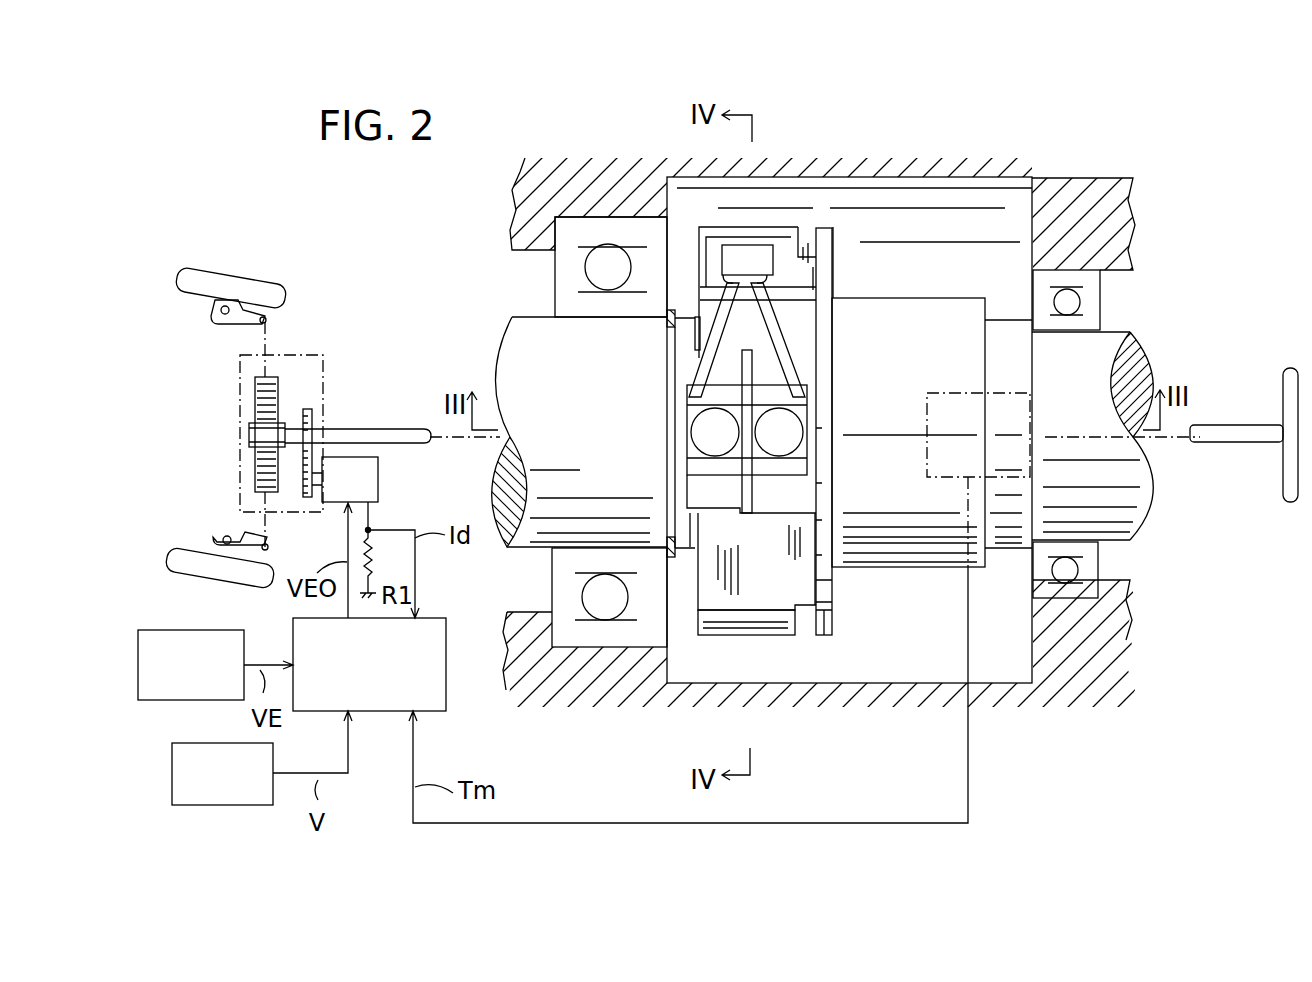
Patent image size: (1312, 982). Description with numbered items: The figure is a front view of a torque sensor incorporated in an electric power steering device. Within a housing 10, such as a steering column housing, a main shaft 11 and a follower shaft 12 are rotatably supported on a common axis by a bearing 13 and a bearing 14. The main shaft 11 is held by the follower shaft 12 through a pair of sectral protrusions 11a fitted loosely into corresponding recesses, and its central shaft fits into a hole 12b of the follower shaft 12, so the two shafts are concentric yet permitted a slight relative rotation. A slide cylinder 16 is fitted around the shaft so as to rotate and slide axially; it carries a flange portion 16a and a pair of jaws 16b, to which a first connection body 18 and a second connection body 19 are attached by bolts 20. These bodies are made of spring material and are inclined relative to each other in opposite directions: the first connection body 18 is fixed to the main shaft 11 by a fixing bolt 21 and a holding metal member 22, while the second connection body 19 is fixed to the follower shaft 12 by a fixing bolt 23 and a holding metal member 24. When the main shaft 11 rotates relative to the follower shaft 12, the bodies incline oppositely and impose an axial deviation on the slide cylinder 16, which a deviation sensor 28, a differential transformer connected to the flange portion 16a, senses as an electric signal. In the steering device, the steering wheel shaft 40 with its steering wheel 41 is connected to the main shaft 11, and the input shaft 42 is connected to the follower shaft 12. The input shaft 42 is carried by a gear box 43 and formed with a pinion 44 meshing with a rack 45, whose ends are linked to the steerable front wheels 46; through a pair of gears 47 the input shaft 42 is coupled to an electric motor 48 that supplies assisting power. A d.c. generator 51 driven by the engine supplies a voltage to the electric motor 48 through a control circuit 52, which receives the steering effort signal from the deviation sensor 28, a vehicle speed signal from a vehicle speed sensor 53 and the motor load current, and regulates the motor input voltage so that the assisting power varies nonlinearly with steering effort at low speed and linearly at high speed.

The housing 10 is at (925, 167).
The main shaft 11 is at (1115, 498).
The sectral protrusions 11a is at (696, 317).
The follower shaft 12 is at (540, 520).
The hole 12b is at (730, 513).
The bearing 13 is at (567, 630).
The bearing 14 is at (1068, 592).
The slide cylinder 16 is at (907, 553).
The flange portion 16a is at (825, 636).
The jaws 16b is at (800, 265).
The first connection body 18 is at (790, 328).
The second connection body 19 is at (710, 338).
The bolts 20 is at (762, 248).
The fixing bolt 21 is at (787, 423).
The holding metal member 22 is at (797, 458).
The fixing bolt 23 is at (703, 432).
The holding metal member 24 is at (694, 467).
The deviation sensor 28 is at (940, 393).
The steering wheel shaft 40 is at (1243, 437).
The steering wheel 41 is at (1290, 488).
The input shaft 42 is at (390, 433).
The gear box 43 is at (297, 350).
The pinion 44 is at (257, 432).
The rack 45 is at (260, 390).
The steerable front wheels 46 is at (195, 273).
The gears 47 is at (307, 463).
The electric motor 48 is at (373, 480).
The d.c. generator 51 is at (152, 637).
The control circuit 52 is at (446, 682).
The vehicle speed sensor 53 is at (172, 783).